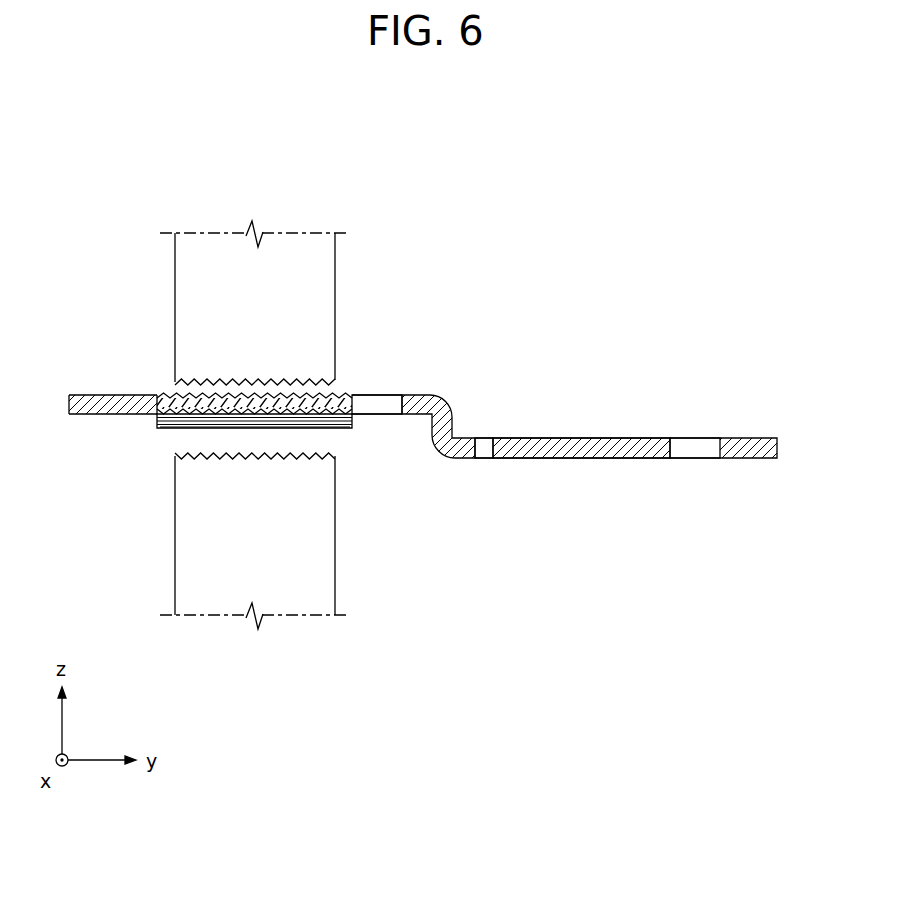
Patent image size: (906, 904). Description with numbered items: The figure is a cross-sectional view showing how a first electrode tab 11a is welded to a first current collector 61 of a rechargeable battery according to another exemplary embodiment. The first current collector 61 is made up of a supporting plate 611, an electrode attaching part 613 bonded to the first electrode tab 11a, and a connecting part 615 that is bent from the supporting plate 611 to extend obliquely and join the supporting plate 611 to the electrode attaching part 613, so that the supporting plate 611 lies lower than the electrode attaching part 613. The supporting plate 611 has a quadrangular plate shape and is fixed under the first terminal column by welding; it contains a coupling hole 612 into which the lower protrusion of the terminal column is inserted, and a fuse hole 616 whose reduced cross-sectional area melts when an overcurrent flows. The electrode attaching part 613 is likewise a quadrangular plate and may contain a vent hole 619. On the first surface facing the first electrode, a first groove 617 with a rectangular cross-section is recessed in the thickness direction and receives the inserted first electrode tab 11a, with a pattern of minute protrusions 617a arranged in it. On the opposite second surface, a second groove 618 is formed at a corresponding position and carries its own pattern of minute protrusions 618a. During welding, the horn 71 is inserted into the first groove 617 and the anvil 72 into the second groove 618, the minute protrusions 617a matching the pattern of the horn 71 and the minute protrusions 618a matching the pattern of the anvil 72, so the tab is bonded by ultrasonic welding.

The first current collector 61 is at (628, 410).
The supporting plate 611 is at (582, 458).
The coupling hole 612 is at (692, 458).
The electrode attaching part 613 is at (300, 393).
The connecting part 615 is at (455, 420).
The fuse hole 616 is at (488, 458).
The first groove 617 is at (158, 430).
The minute protrusions 617a is at (180, 428).
The second groove 618 is at (163, 394).
The minute protrusions 618a is at (187, 395).
The vent hole 619 is at (387, 392).
The first electrode tab 11a is at (352, 420).
The horn 71 is at (195, 555).
The anvil 72 is at (195, 272).